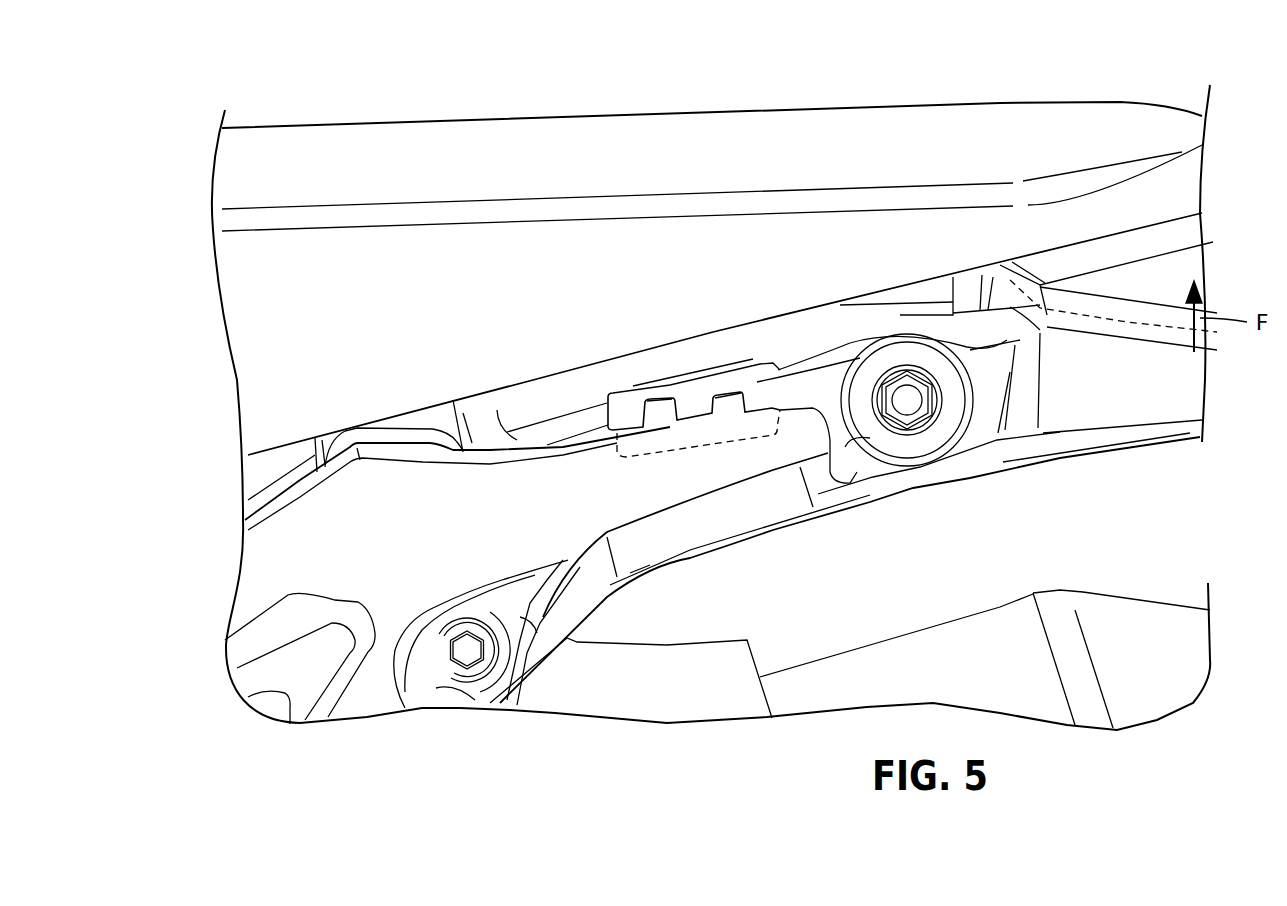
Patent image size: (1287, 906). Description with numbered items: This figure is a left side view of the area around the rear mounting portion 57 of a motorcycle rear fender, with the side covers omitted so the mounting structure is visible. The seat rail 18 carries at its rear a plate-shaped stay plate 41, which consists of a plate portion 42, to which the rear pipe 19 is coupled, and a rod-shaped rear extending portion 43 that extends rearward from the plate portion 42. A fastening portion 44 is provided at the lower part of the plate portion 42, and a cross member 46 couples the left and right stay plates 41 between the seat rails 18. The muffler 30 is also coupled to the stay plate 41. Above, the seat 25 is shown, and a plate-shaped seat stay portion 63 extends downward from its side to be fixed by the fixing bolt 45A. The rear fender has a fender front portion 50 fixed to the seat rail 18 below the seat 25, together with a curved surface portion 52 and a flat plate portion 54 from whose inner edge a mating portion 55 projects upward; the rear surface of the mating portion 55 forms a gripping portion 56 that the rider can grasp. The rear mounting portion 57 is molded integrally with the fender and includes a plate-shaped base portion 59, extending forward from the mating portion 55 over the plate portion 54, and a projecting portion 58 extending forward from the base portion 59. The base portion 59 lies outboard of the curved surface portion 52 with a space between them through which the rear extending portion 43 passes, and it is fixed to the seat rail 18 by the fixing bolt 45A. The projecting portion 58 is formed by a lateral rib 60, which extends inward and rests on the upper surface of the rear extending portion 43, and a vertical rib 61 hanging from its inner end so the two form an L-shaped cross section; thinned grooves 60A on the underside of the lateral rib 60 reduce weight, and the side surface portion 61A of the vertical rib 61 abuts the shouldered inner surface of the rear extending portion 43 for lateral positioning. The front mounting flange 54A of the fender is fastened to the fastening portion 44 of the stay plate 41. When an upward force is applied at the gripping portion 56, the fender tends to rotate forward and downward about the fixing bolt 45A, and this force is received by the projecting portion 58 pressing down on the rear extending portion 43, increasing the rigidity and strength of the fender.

The seat rail 18 is at (233, 569).
The rear pipe 19 is at (268, 707).
The seat 25 is at (522, 128).
The muffler 30 is at (1147, 705).
The stay plate 41 is at (226, 602).
The plate portion 42 is at (240, 635).
The rear extending portion 43 is at (760, 455).
The fastening portion 44 is at (438, 688).
The fixing bolt 45A is at (907, 402).
The cross member 46 is at (407, 420).
The fender front portion 50 is at (687, 373).
The curved surface portion 52 is at (762, 337).
The plate portion 54 is at (990, 460).
The front mounting flange 54A is at (537, 608).
The mating portion 55 is at (1130, 330).
The gripping portion 56 is at (1153, 327).
The rear mounting portion 57 is at (880, 452).
The projecting portion 58 is at (798, 362).
The base portion 59 is at (943, 447).
The lateral rib 60 is at (717, 380).
The thinned groove 60A is at (723, 402).
The vertical rib 61 is at (650, 455).
The side surface portion 61A is at (668, 402).
The seat stay portion 63 is at (932, 293).